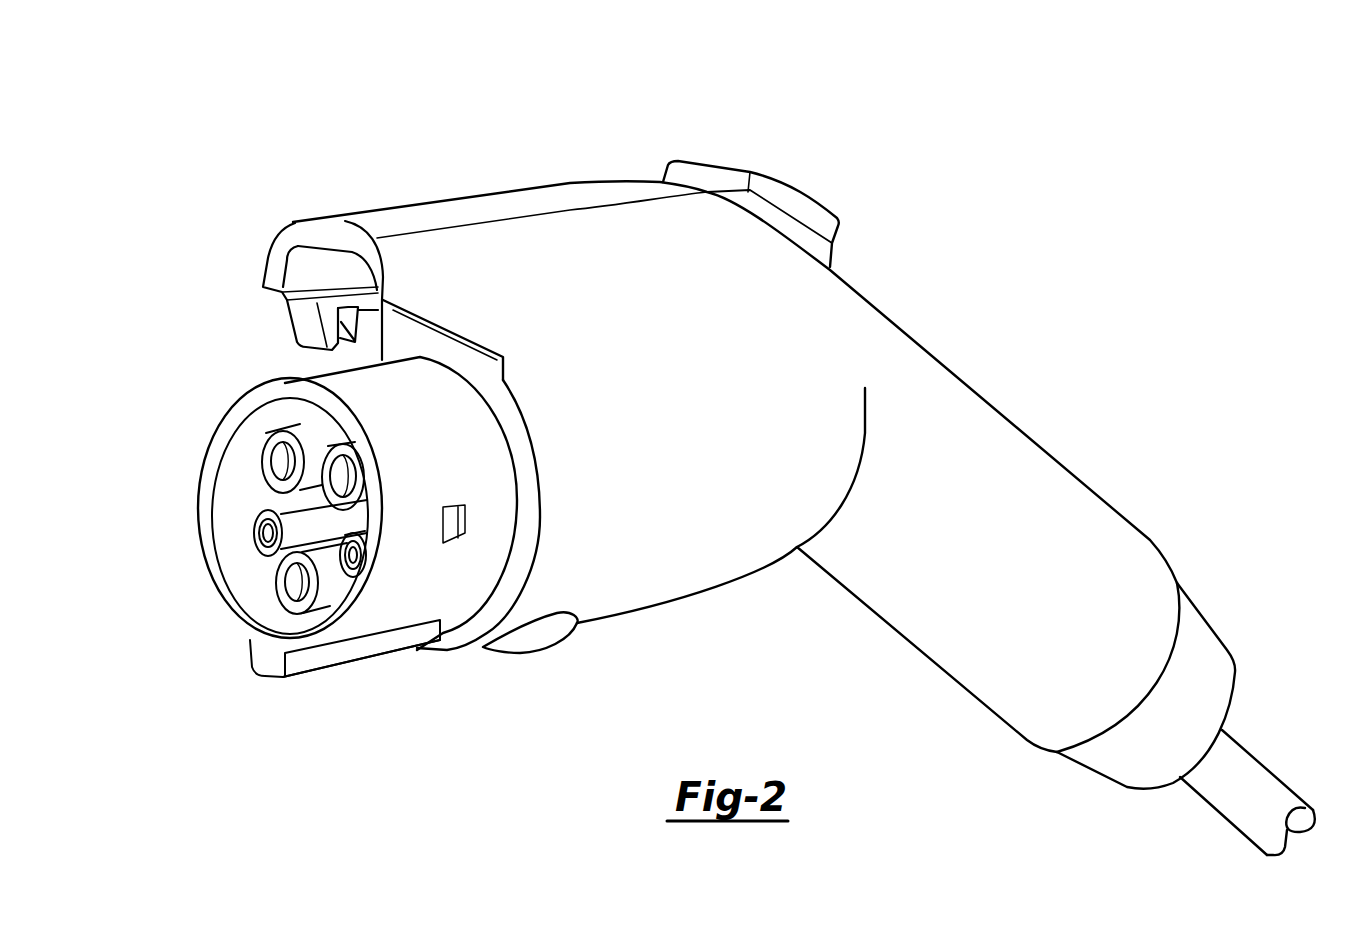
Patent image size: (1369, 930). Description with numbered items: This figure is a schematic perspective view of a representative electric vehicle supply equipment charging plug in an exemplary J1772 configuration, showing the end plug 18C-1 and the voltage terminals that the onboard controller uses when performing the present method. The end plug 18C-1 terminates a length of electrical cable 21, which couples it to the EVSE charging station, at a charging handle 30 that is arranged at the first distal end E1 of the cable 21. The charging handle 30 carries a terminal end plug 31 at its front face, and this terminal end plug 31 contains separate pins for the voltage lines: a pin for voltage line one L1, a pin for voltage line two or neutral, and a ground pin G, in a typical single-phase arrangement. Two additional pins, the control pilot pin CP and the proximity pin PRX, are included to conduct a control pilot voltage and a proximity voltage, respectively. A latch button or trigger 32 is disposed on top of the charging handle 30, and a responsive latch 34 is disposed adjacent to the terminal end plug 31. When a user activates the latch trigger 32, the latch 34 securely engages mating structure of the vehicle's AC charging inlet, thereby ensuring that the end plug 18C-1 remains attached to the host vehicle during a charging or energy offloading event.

The end plug 18C-1 is at (1066, 138).
The charging handle 30 is at (985, 398).
The terminal end plug 31 is at (188, 357).
The latch button or trigger 32 is at (797, 190).
The latch 34 is at (298, 315).
The electrical cable 21 is at (1270, 768).
The first distal end E1 is at (362, 692).
The voltage line 1 pin L1 is at (327, 453).
The control pilot pin CP is at (257, 532).
The ground pin G is at (282, 585).
The proximity pin PRX is at (348, 577).